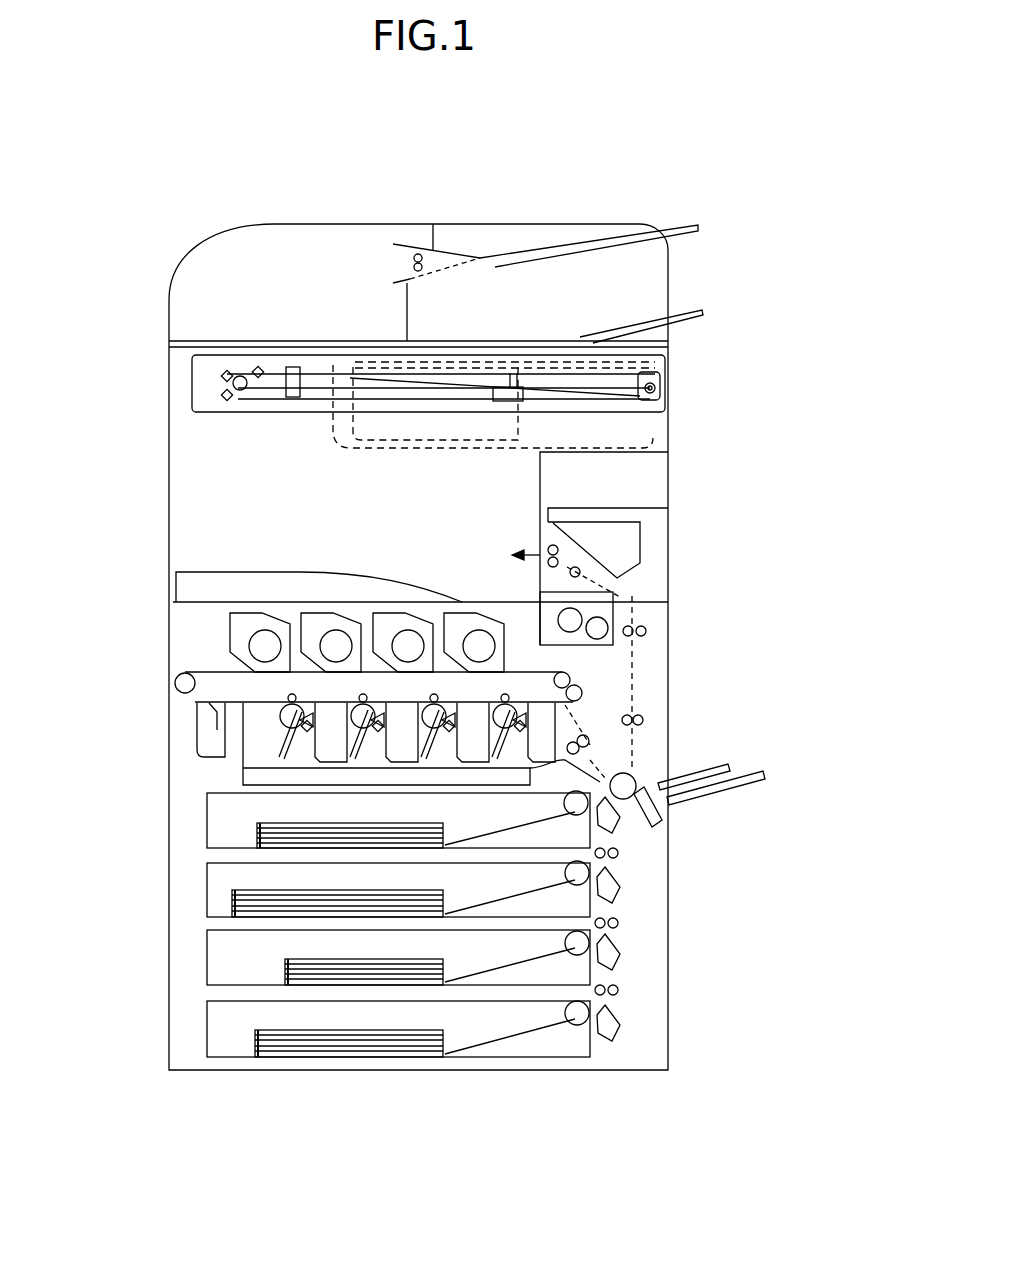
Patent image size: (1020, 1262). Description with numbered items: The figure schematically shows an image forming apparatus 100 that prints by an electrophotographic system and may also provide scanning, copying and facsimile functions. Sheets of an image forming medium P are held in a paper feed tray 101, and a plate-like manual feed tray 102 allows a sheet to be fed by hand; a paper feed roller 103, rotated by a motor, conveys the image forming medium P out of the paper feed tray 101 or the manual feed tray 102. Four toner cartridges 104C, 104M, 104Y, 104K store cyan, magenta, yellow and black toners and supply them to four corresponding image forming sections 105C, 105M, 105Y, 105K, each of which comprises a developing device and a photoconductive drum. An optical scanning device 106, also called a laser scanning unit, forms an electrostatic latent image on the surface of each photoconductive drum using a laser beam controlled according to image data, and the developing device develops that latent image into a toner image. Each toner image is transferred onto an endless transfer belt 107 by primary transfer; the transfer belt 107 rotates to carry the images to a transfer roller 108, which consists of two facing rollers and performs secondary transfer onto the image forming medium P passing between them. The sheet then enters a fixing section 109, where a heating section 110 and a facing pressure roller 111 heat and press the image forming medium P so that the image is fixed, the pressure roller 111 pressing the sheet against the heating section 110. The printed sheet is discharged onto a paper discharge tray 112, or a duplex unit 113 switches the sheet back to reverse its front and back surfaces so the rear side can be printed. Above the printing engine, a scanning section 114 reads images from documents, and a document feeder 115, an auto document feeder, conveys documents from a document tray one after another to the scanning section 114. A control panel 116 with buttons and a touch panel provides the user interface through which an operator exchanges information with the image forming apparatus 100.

The image forming apparatus 100 is at (632, 206).
The paper feed tray 101 is at (614, 992).
The manual feed tray 102 is at (690, 803).
The paper feed roller 103 is at (636, 797).
The toner cartridge 104C is at (240, 630).
The toner cartridge 104M is at (310, 646).
The toner cartridge 104Y is at (380, 660).
The toner cartridge 104K is at (450, 665).
The image forming section 105C is at (270, 722).
The image forming section 105M is at (340, 745).
The image forming section 105Y is at (410, 750).
The image forming section 105K is at (480, 757).
The optical scanning device 106 is at (640, 776).
The transfer belt 107 is at (570, 672).
The transfer roller 108 is at (582, 693).
The fixing section 109 is at (617, 582).
The heating section 110 is at (540, 612).
The pressure roller 111 is at (590, 617).
The paper discharge tray 112 is at (455, 600).
The duplex unit 113 is at (645, 720).
The scanning section 114 is at (192, 368).
The document feeder 115 is at (200, 310).
The control panel 116 is at (643, 433).
The image forming medium P is at (255, 1030).